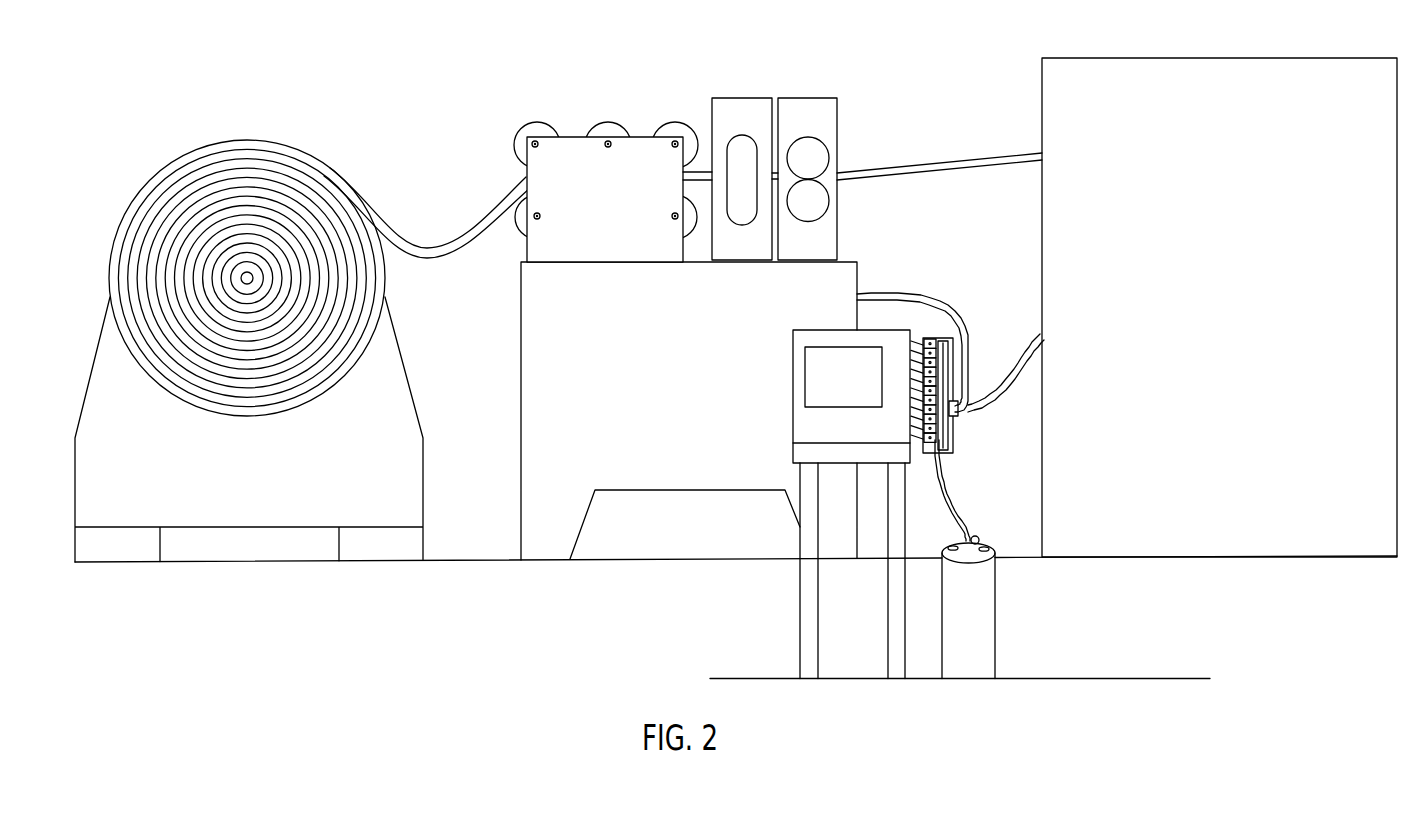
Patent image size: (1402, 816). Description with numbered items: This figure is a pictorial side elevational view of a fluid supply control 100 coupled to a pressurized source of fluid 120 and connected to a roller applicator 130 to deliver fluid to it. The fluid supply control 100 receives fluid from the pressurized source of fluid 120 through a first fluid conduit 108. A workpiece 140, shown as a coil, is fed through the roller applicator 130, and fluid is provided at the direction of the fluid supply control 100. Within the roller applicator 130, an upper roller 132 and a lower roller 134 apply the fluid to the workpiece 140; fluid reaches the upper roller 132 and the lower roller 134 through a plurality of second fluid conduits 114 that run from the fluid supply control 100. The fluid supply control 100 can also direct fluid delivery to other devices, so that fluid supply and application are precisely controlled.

The fluid supply control 100 is at (792, 357).
The first fluid conduit 108 is at (943, 483).
The second fluid conduits 114 is at (958, 322).
The pressurized source of fluid 120 is at (985, 630).
The roller applicator 130 is at (790, 96).
The upper roller 132 is at (822, 142).
The lower roller 134 is at (827, 212).
The workpiece 140 is at (197, 142).